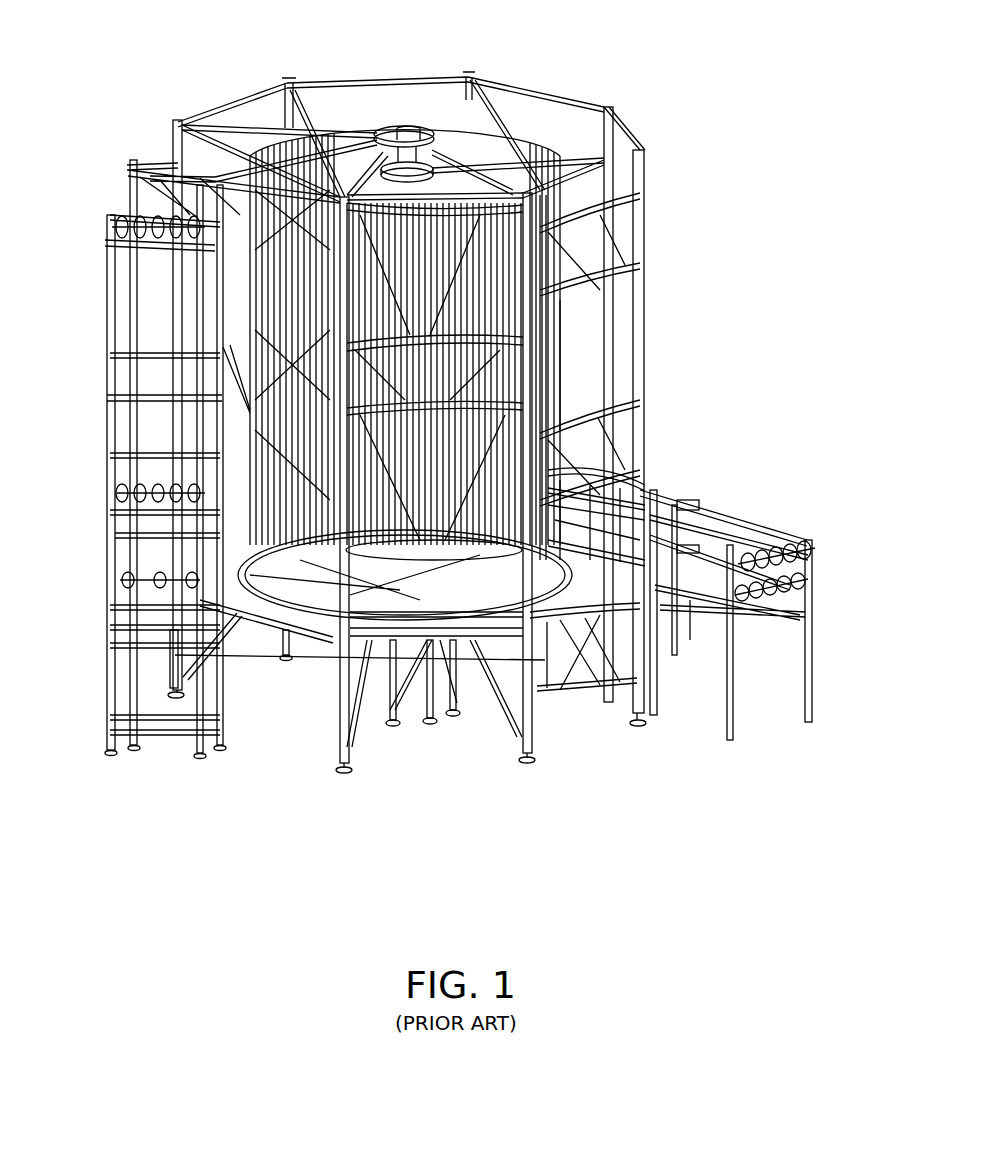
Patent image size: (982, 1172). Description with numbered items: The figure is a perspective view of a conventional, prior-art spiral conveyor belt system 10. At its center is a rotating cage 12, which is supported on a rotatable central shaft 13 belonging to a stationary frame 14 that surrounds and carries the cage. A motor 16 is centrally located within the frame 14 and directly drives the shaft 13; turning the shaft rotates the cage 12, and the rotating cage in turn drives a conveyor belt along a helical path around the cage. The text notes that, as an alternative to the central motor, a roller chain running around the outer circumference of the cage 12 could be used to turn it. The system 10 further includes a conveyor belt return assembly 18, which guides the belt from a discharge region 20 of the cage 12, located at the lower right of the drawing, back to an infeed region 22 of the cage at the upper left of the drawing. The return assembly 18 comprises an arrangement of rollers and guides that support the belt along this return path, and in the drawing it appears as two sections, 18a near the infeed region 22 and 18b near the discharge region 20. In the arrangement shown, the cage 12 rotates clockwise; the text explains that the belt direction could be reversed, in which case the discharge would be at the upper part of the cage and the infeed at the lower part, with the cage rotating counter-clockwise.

The spiral conveyor belt system 10 is at (154, 62).
The rotating cage 12 is at (603, 307).
The rotatable central shaft 13 is at (407, 125).
The stationary frame 14 is at (536, 722).
The motor 16 is at (405, 598).
The conveyor belt return assembly 18 is at (757, 517).
The input conveyor section 18a is at (108, 428).
The output conveyor section 18b is at (810, 590).
The discharge region 20 is at (643, 470).
The infeed region 22 is at (145, 165).